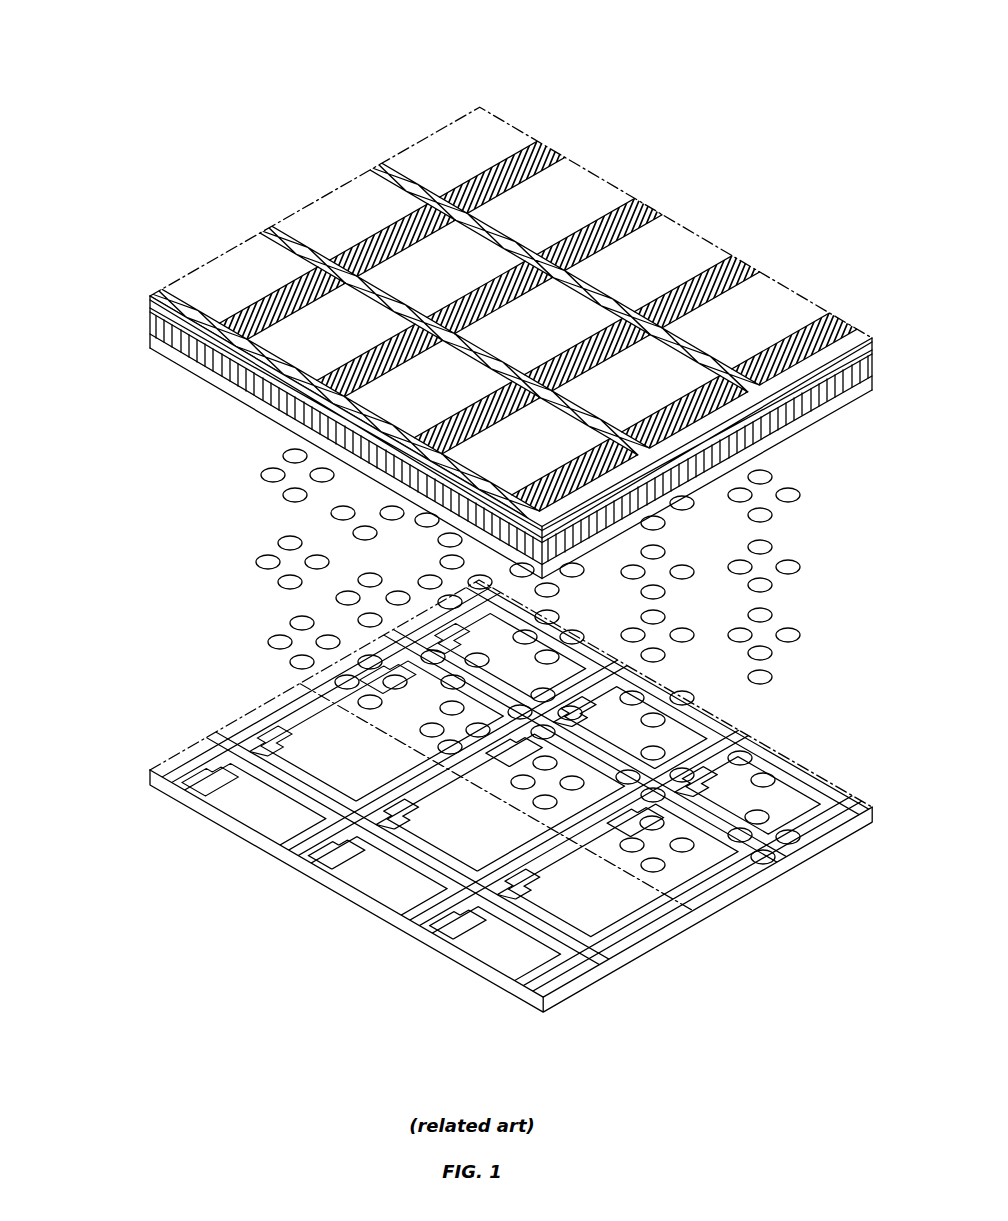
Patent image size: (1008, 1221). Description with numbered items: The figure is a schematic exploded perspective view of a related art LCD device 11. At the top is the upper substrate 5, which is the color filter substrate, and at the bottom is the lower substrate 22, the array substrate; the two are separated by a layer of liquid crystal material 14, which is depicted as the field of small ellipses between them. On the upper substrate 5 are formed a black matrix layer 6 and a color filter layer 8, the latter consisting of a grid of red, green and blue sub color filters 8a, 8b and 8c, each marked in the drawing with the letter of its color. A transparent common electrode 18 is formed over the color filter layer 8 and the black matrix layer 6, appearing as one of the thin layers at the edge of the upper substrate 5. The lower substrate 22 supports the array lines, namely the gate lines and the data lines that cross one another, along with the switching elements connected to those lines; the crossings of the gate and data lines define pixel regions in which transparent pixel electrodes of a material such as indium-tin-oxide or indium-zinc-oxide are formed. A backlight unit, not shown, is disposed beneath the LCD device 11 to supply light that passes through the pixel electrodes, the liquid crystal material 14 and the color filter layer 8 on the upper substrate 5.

The upper substrate 5 is at (150, 312).
The black matrix layer 6 is at (790, 405).
The color filter layer 8 is at (487, 47).
The red sub color filter 8a is at (467, 157).
The green sub color filter 8b is at (564, 214).
The blue sub color filter 8c is at (662, 271).
The LCD device 11 is at (80, 790).
The layer of liquid crystal material 14 is at (792, 634).
The transparent common electrode 18 is at (150, 340).
The lower substrate 22 is at (530, 998).